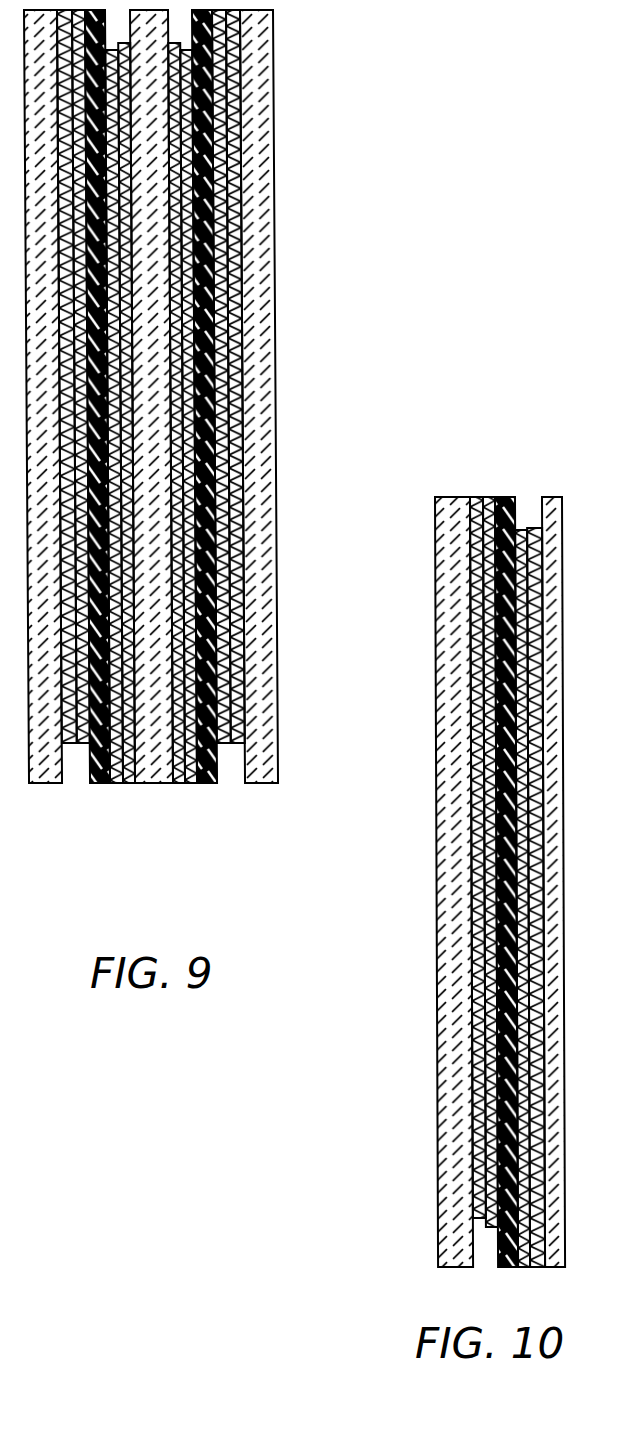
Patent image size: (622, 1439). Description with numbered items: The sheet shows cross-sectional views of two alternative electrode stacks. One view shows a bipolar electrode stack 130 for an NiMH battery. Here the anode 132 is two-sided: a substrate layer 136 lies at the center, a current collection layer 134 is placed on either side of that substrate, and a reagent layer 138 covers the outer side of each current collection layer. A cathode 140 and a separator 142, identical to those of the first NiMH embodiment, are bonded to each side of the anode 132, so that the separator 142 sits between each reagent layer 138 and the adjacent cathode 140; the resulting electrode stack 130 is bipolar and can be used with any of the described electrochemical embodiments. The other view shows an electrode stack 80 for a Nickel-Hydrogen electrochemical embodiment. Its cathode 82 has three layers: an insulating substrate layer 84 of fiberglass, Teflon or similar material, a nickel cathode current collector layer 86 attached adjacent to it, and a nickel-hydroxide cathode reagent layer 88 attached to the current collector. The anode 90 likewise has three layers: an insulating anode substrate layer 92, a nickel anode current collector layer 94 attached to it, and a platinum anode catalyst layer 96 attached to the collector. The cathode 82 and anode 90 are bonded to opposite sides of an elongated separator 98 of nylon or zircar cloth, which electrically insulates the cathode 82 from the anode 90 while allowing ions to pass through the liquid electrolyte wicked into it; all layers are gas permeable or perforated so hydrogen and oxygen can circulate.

In FIG. 9, the electrode stack 130 is at (201, 458).
In FIG. 9, the anode 132 is at (243, 439).
In FIG. 9, the current collection layer 134 is at (147, 186).
In FIG. 9, the substrate layer 136 is at (137, 308).
In FIG. 9, the reagent layer 138 is at (103, 397).
In FIG. 9, the cathode 140 is at (57, 808).
In FIG. 9, the separator 142 is at (98, 785).
In FIG. 10, the electrode stack 80 is at (463, 830).
In FIG. 10, the cathode 82 is at (471, 830).
In FIG. 10, the substrate layer 84 is at (460, 1015).
In FIG. 10, the cathode current collector layer 86 is at (482, 1062).
In FIG. 10, the cathode reagent layer 88 is at (493, 1135).
In FIG. 10, the anode 90 is at (567, 848).
In FIG. 10, the anode substrate layer 92 is at (555, 1040).
In FIG. 10, the anode current collector layer 94 is at (537, 1078).
In FIG. 10, the anode catalyst layer 96 is at (522, 1105).
In FIG. 10, the separator 98 is at (502, 497).